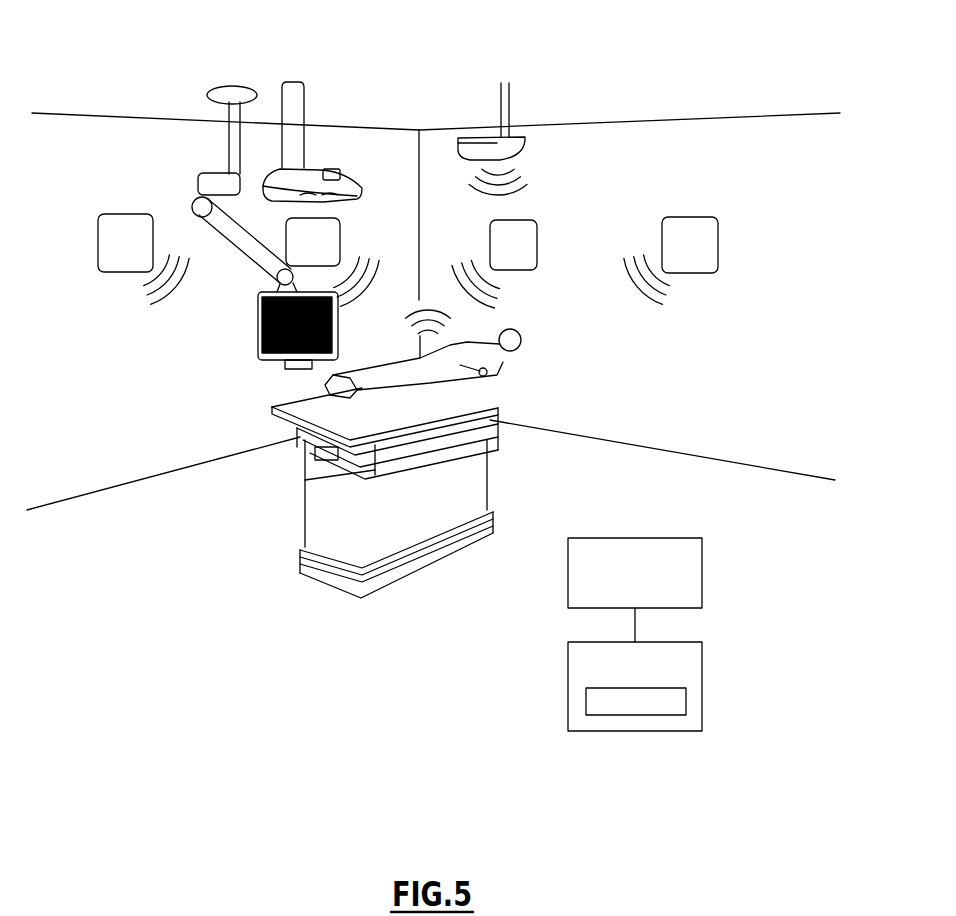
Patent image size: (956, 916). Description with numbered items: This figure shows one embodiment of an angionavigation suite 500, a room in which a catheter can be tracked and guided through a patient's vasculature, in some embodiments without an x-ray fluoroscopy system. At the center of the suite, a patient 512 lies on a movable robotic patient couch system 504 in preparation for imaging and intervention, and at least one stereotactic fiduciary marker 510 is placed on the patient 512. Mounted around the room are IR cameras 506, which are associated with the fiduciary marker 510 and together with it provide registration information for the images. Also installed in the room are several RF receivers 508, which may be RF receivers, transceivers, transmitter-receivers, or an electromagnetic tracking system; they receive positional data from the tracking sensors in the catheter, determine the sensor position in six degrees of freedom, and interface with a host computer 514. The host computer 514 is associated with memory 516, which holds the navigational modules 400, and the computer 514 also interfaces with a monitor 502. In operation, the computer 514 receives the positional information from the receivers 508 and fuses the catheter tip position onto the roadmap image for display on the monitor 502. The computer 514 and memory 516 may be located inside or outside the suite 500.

The angionavigation suite 500 is at (136, 60).
The monitor 502 is at (262, 306).
The patient couch system 504 is at (311, 544).
The IR cameras 506 is at (323, 170).
The RF receivers 508 is at (112, 214).
The stereotactic fiduciary marker 510 is at (487, 373).
The patient 512 is at (526, 344).
The host computer 514 is at (703, 581).
The memory 516 is at (703, 701).
The navigational modules 400 is at (586, 701).